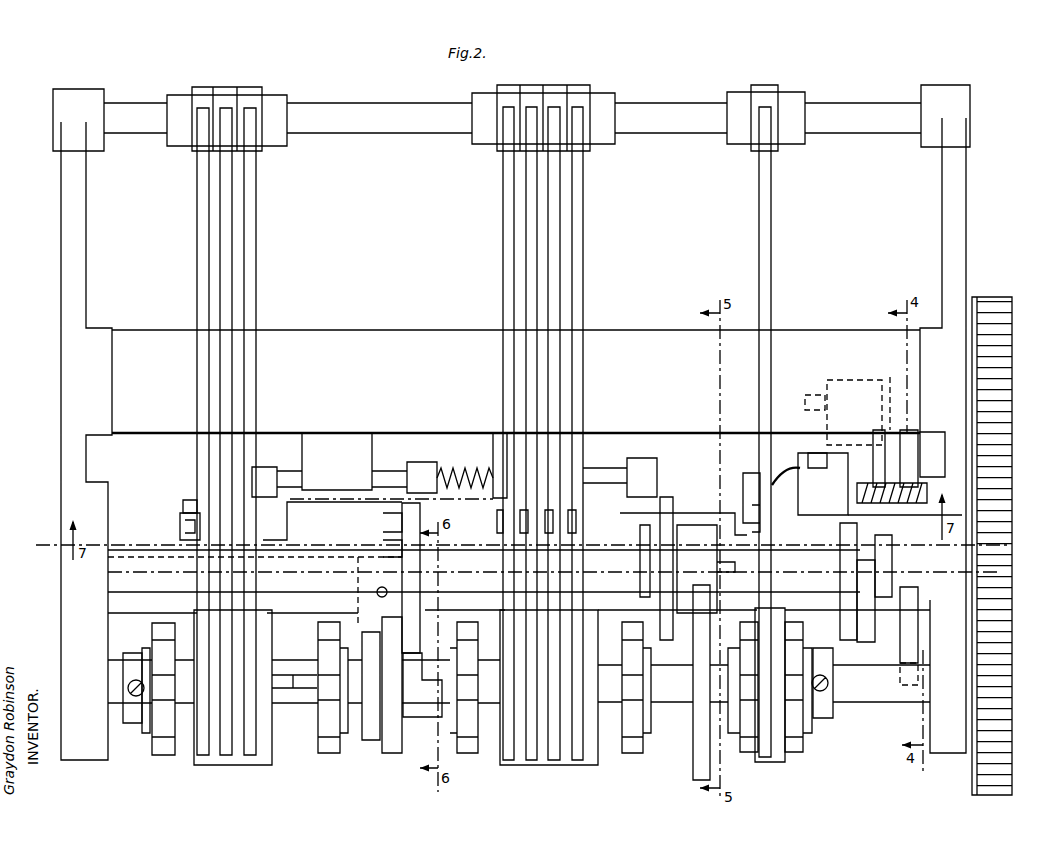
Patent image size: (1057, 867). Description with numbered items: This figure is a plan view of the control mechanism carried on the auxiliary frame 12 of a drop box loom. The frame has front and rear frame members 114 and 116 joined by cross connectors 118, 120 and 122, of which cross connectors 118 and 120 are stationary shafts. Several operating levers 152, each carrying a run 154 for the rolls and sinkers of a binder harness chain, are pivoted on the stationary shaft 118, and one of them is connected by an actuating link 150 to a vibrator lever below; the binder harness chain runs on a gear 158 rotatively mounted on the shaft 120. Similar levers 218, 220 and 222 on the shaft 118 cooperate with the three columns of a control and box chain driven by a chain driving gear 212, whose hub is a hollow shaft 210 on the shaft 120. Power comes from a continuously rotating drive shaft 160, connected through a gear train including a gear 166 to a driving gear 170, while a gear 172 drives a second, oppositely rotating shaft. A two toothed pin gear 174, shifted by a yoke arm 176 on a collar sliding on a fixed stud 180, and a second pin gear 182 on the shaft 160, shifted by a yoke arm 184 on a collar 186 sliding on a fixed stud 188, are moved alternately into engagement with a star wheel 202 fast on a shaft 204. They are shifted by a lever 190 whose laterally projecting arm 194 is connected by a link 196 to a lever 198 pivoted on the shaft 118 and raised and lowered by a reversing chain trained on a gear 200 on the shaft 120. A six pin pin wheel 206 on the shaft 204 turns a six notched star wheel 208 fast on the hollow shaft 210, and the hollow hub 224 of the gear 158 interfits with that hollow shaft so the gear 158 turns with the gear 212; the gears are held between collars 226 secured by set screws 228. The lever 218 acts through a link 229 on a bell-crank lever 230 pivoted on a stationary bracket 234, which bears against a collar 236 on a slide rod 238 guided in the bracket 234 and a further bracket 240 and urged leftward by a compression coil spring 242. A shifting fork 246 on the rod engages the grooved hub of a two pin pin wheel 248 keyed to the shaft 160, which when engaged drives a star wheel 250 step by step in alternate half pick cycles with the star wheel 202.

The auxiliary frame 12 is at (52, 422).
The front frame member 114 is at (962, 215).
The rear frame member 116 is at (62, 300).
The stationary shaft 118 is at (349, 104).
The stationary shaft 120 is at (120, 708).
The cross connector 122 is at (331, 329).
The actuating link 150 is at (545, 522).
The operating lever 152 is at (505, 265).
The run 154 is at (535, 762).
The gear 158 is at (468, 757).
The drive shaft 160 is at (1005, 562).
The gear 166 is at (1005, 683).
The driving gear 170 is at (1012, 332).
The gear 172 is at (1005, 436).
The pin gear 174 is at (886, 430).
The yoke arm 176 is at (872, 472).
The fixed stud 180 is at (812, 395).
The pin gear 182 is at (848, 533).
The yoke arm 184 is at (845, 555).
The collar 186 is at (850, 380).
The fixed stud 188 is at (912, 478).
The lever 190 is at (812, 455).
The laterally projecting arm 194 is at (790, 462).
The link 196 is at (748, 508).
The lever 198 is at (771, 237).
The gear 200 is at (790, 758).
The star wheel 202 is at (898, 650).
The shaft 204 is at (140, 607).
The pin wheel 206 is at (920, 490).
The star wheel 208 is at (392, 757).
The hollow shaft 210 is at (410, 705).
The chain driving gear 212 is at (163, 757).
The lever 218 is at (197, 207).
The lever 220 is at (221, 270).
The lever 222 is at (256, 238).
The hollow hub 224 is at (420, 463).
The collar 226 is at (135, 725).
The set screw 228 is at (128, 688).
The link 229 is at (185, 518).
The bell-crank lever 230 is at (190, 500).
The stationary bracket 234 is at (330, 440).
The collar 236 is at (265, 468).
The slide rod 238 is at (386, 475).
The stationary bracket 240 is at (497, 435).
The compression coil spring 242 is at (458, 470).
The shifting fork 246 is at (648, 517).
The pin wheel 248 is at (660, 497).
The star wheel 250 is at (700, 735).